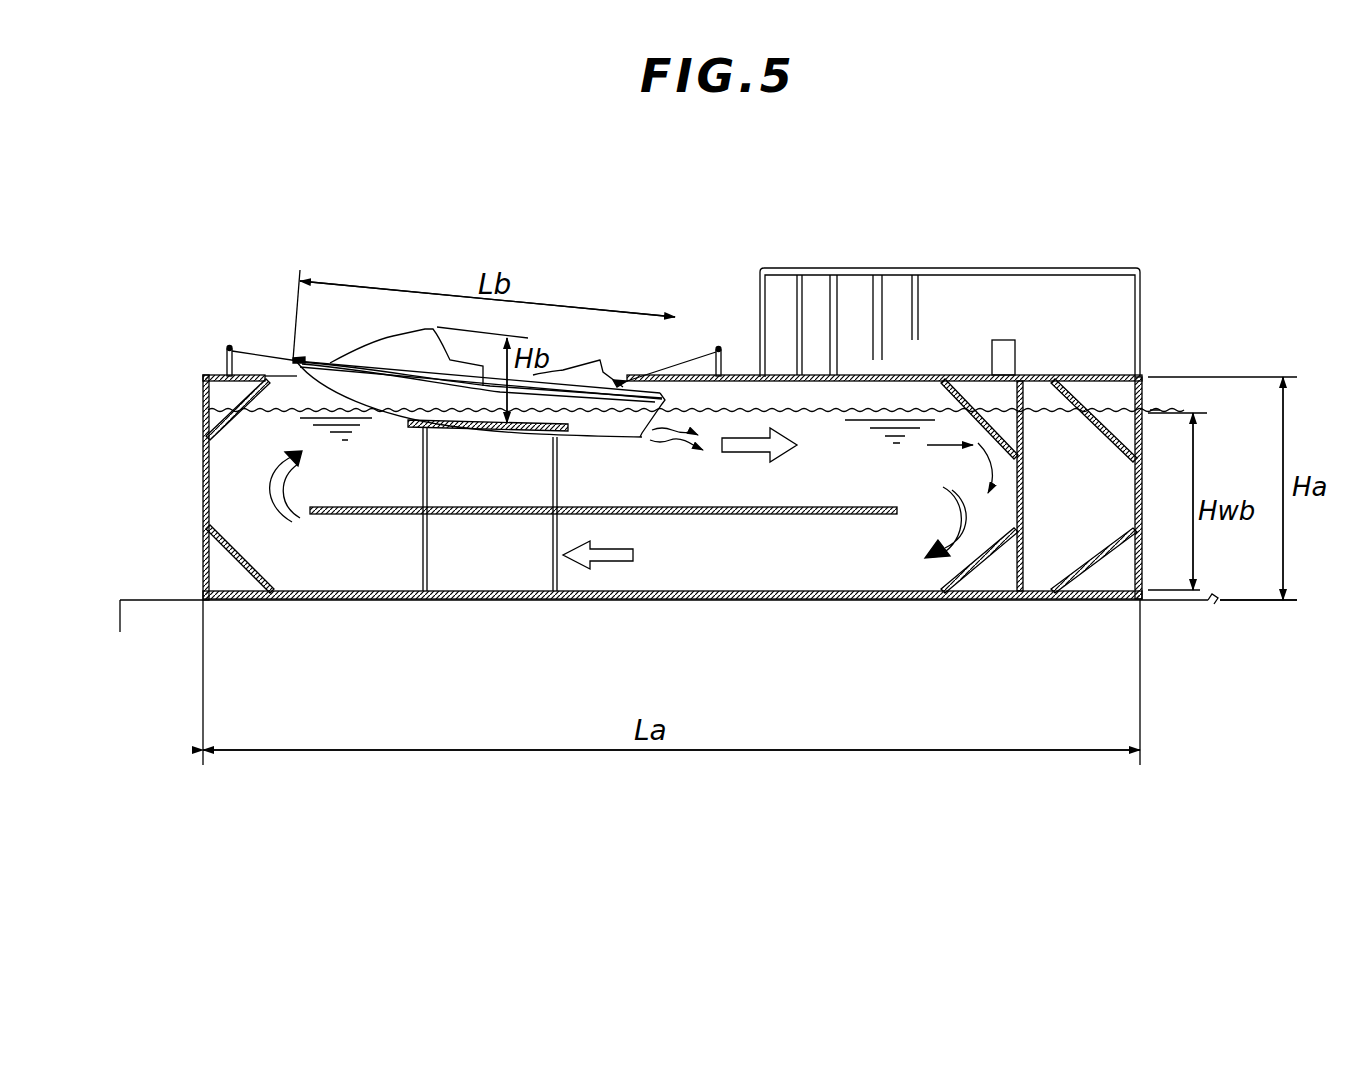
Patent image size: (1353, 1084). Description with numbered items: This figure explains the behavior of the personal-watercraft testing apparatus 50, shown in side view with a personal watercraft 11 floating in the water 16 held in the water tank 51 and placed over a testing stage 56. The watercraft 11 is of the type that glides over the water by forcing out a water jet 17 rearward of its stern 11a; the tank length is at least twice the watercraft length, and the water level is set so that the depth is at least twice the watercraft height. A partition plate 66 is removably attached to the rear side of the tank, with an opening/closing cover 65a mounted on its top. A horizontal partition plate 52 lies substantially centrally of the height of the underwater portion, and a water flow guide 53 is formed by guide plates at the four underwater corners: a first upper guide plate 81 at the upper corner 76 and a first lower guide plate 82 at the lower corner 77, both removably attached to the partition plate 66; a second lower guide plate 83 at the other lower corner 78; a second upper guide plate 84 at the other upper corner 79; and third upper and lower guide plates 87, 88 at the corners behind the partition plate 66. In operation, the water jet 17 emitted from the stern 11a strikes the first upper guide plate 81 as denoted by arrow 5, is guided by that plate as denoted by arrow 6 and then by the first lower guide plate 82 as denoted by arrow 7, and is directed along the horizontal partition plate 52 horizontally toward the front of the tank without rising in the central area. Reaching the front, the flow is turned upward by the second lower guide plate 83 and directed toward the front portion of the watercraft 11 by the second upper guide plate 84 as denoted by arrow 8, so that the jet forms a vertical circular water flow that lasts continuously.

The personal-watercraft testing apparatus 50 is at (272, 277).
The personal watercraft 11 is at (380, 323).
The stern 11a is at (680, 432).
The water jet 17 is at (695, 393).
The upper corner 79 is at (224, 352).
The water 16 is at (820, 430).
The water flow guide 53 is at (946, 416).
The first upper guide plate 81 is at (927, 382).
The opening/closing cover 65a is at (970, 377).
The upper corner 76 is at (1005, 392).
The water tank 51 is at (1058, 352).
The third upper guide plate 87 is at (1090, 400).
The third lower guide plate 88 is at (1102, 565).
The partition plate 66 is at (1028, 580).
The lower corner 77 is at (1000, 578).
The first lower guide plate 82 is at (950, 576).
The horizontal partition plate 52 is at (693, 515).
The testing stage 56 is at (402, 565).
The second lower guide plate 83 is at (232, 557).
The second upper guide plate 84 is at (235, 410).
The lower corner 78 is at (215, 563).
The arrow 5 is at (945, 462).
The arrow 6 is at (972, 468).
The arrow 7 is at (934, 535).
The arrow 8 is at (304, 486).